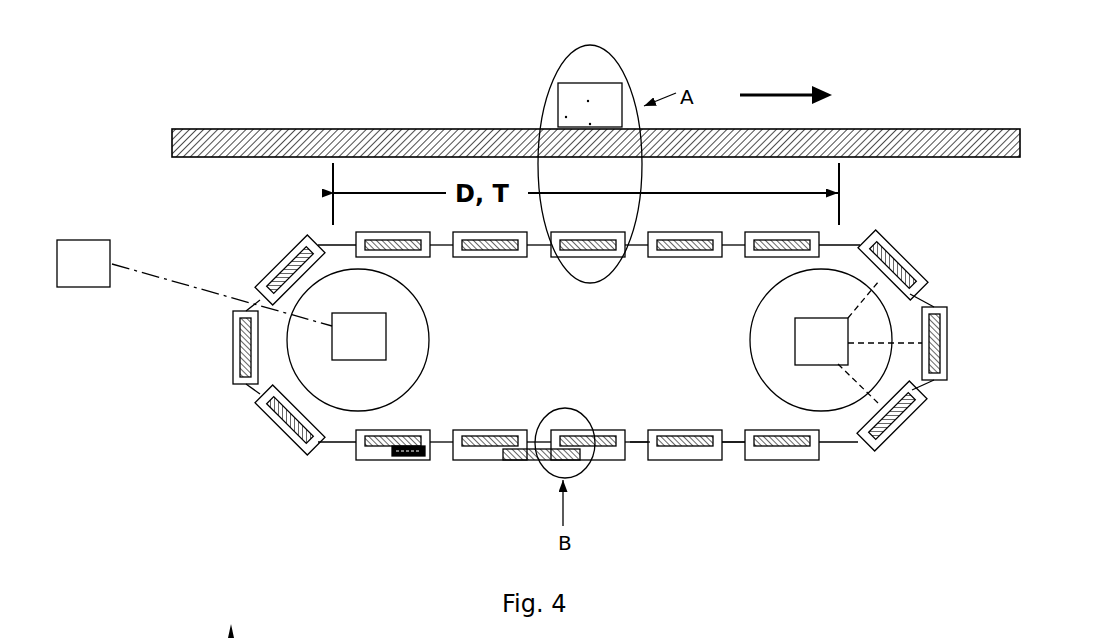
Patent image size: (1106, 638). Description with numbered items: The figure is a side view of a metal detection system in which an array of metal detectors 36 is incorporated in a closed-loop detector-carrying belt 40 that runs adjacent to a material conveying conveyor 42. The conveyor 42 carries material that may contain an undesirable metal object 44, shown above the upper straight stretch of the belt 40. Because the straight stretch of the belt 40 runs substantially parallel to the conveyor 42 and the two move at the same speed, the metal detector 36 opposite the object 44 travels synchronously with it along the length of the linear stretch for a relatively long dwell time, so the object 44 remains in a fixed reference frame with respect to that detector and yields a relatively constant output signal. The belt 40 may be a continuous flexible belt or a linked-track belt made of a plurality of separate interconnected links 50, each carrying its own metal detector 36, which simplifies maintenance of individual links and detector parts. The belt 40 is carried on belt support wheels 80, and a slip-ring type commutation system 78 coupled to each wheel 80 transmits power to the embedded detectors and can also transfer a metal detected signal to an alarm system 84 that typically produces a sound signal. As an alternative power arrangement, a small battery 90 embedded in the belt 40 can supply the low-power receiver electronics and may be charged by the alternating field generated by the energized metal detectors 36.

The metal detector 36 is at (233, 348).
The closed-loop detector-carrying belt 40 is at (262, 421).
The conveyor 42 is at (852, 126).
The metal object 44 is at (558, 98).
The interconnected link 50 is at (735, 448).
The commutation system 78 is at (627, 342).
The belt support wheel 80 is at (346, 413).
The alarm system 84 is at (194, 283).
The battery 90 is at (408, 462).